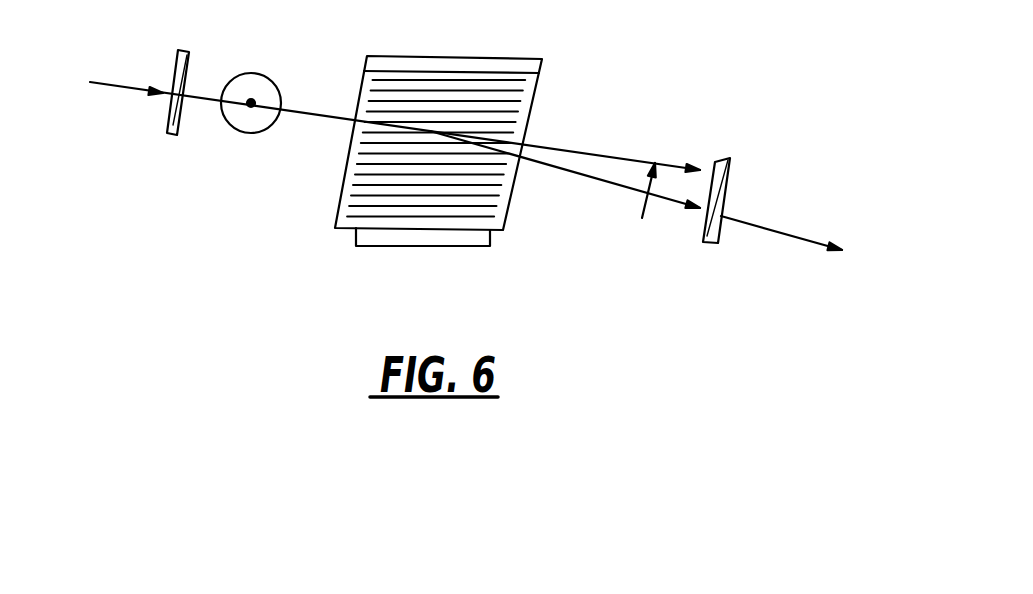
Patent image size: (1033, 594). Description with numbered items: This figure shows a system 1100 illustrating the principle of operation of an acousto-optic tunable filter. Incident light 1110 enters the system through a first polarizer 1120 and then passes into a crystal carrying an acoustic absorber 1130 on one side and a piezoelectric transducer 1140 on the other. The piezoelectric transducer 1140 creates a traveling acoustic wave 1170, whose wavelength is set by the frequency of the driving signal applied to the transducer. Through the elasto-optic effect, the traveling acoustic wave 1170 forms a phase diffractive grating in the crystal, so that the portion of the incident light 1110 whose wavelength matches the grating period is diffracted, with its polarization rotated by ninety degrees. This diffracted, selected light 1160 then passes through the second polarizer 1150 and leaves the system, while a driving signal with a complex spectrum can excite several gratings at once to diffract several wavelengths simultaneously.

The system 1100 is at (677, 100).
The incident light 1110 is at (124, 38).
The first polarizer 1120 is at (170, 135).
The acoustic absorber 1130 is at (438, 55).
The piezoelectric transducer 1140 is at (448, 246).
The second polarizer 1150 is at (730, 160).
The selected light 1160 is at (812, 246).
The traveling acoustic wave 1170 is at (397, 207).